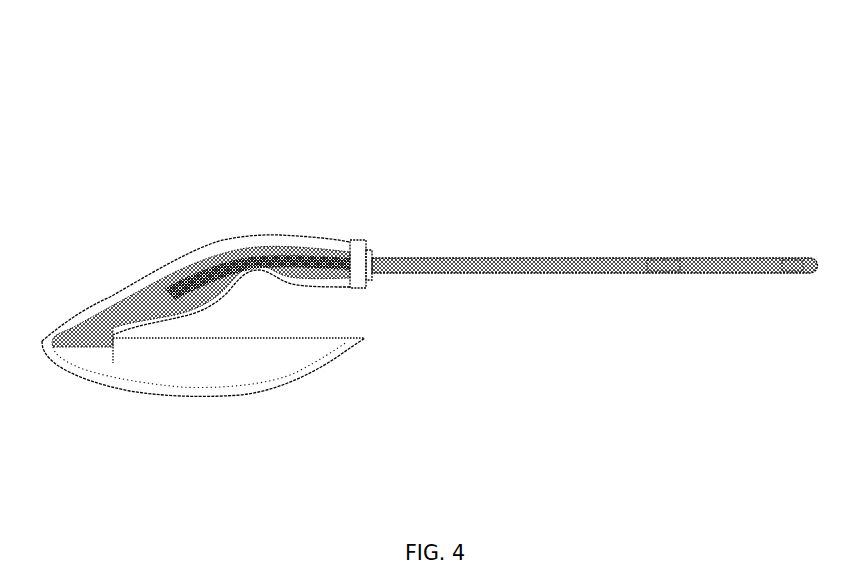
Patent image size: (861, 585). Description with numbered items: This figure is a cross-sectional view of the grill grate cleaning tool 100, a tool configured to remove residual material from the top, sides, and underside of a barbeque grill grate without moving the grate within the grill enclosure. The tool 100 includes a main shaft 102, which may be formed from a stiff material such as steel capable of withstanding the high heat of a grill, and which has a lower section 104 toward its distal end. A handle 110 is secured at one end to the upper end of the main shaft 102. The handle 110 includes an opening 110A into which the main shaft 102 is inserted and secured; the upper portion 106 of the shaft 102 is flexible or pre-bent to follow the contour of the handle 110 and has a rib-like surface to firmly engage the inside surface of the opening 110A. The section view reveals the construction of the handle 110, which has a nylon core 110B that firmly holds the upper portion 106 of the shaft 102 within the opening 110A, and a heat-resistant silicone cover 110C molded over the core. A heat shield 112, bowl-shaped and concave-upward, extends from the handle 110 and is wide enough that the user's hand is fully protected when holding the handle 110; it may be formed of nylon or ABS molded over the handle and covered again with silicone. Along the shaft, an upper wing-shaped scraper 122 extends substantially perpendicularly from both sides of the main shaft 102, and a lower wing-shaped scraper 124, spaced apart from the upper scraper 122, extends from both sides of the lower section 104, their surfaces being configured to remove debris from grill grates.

The tool 100 is at (604, 98).
The handle 110 is at (268, 172).
The opening 110A is at (380, 240).
The nylon core 110B is at (130, 303).
The heat-resistant silicone cover 110C is at (312, 238).
The upper portion of the shaft 106 is at (230, 260).
The heat shield 112 is at (177, 395).
The main shaft 102 is at (548, 255).
The lower section 104 is at (738, 257).
The upper wing-shaped scraper 122 is at (658, 270).
The lower wing-shaped scraper 124 is at (797, 265).